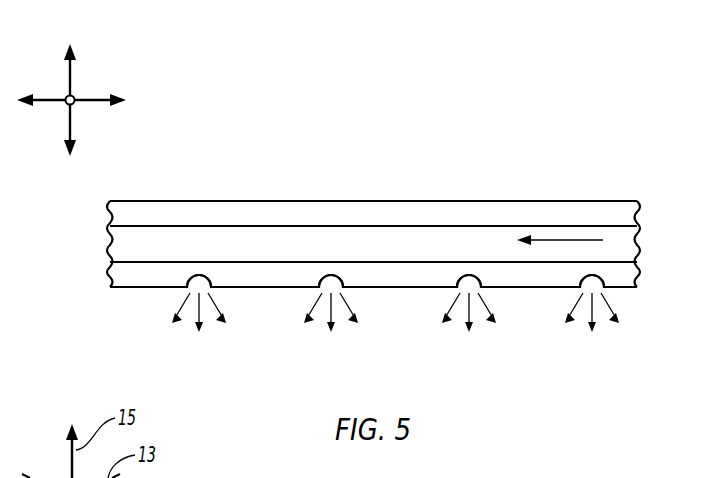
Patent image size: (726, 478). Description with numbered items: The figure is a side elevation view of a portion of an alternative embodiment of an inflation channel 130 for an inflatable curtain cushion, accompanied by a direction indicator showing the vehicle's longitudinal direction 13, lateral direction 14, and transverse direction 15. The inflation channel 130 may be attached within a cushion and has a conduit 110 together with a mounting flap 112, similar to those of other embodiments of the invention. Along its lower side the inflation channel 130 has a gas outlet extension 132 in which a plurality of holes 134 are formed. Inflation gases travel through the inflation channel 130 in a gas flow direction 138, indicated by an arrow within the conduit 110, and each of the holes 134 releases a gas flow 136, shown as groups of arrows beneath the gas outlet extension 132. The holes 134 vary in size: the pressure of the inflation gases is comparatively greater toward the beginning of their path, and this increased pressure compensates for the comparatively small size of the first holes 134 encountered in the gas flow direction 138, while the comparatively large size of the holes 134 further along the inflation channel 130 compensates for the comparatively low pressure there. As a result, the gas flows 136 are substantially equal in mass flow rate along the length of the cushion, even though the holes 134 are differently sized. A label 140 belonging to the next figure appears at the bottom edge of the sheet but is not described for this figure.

The longitudinal direction 13 is at (105, 100).
The lateral direction 14 is at (74, 103).
The transverse direction 15 is at (72, 70).
The conduit 110 is at (412, 236).
The mounting flap 112 is at (538, 208).
The inflation channel 130 is at (413, 152).
The gas outlet extension 132 is at (412, 280).
The holes 134 is at (207, 273).
The gas flow 136 is at (205, 316).
The gas flow direction 138 is at (581, 240).
The substrate assembly (next figure) 140 is at (440, 477).